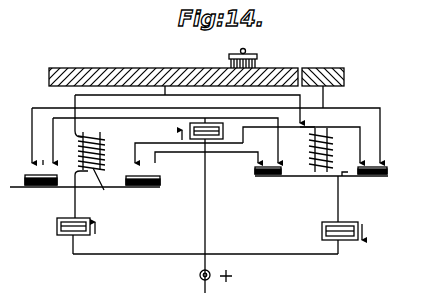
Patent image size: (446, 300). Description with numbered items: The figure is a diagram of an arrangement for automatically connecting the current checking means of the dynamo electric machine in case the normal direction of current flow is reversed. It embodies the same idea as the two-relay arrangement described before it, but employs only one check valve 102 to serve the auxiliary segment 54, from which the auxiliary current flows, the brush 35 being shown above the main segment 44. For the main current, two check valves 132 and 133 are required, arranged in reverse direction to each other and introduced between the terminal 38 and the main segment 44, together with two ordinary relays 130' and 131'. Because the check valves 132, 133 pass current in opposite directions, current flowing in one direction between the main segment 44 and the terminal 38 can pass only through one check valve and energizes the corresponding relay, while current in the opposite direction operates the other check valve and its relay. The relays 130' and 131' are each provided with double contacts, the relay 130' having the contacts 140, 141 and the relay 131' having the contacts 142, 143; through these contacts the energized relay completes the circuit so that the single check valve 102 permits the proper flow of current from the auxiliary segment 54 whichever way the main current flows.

The main segment 44 is at (101, 77).
The brush 35 is at (258, 58).
The auxiliary segment 54 is at (312, 68).
The check valve 102 is at (211, 139).
The ordinary relay 130' is at (104, 156).
The ordinary relay 131' is at (316, 164).
The double contact 140 is at (36, 186).
The double contact 141 is at (155, 186).
The double contact 142 is at (267, 177).
The double contact 143 is at (372, 177).
The electric check valve 132 is at (90, 234).
The electric check valve 133 is at (322, 234).
The terminal 38 is at (201, 279).